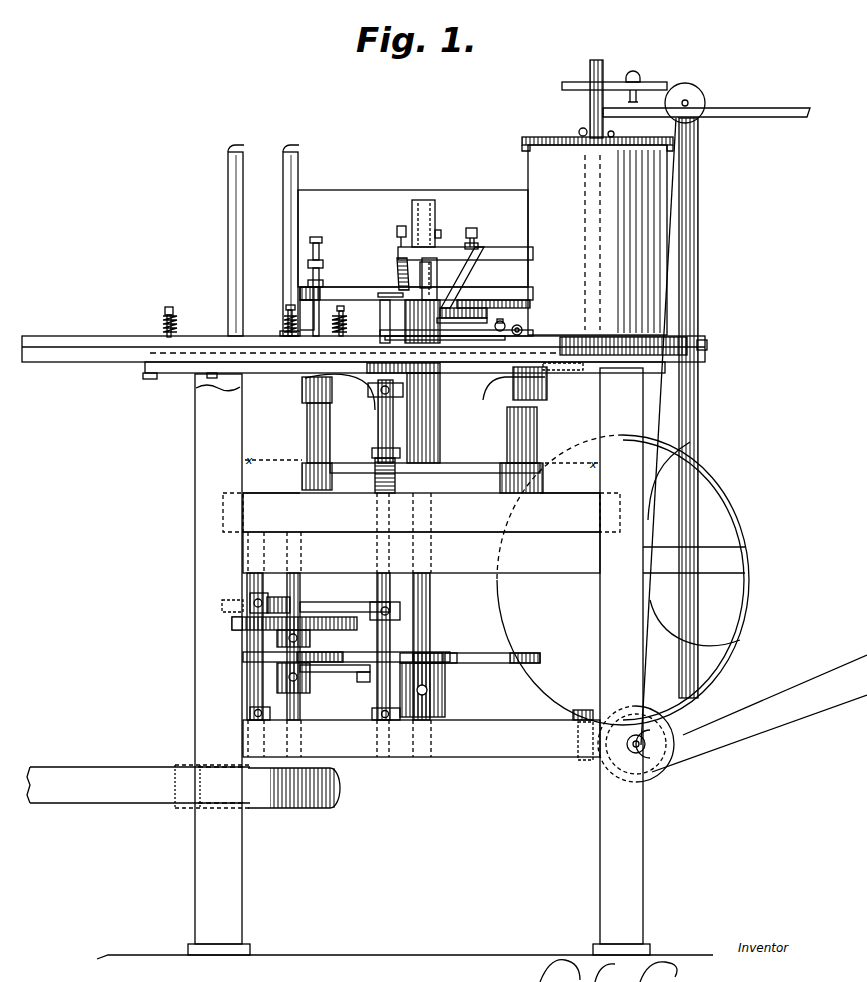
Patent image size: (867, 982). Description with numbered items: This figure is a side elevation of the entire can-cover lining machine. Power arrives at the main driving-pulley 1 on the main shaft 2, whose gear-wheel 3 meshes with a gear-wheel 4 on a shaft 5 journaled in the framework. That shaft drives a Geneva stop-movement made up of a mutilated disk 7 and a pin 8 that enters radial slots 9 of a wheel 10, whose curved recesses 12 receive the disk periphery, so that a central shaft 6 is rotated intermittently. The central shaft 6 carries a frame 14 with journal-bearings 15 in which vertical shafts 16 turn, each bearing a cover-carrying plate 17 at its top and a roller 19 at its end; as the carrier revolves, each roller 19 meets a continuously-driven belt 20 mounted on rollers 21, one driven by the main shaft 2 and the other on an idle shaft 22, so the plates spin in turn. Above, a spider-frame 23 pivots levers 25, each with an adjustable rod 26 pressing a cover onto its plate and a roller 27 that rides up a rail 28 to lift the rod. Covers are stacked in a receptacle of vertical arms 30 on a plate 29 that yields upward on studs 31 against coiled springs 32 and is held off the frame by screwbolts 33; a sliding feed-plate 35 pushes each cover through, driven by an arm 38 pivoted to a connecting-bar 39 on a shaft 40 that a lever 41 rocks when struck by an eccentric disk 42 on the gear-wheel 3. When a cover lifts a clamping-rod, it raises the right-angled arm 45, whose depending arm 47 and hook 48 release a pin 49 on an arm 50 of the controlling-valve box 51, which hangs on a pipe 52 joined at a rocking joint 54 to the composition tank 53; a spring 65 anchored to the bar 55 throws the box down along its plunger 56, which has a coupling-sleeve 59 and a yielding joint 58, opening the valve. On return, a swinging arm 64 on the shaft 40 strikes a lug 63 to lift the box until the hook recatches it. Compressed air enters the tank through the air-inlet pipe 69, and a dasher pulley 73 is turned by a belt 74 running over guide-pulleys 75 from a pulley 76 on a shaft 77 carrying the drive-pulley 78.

The main driving-pulley 1 is at (306, 810).
The main shaft 2 is at (255, 810).
The gear-wheel 3 is at (232, 625).
The gear-wheel 4 is at (345, 635).
The shaft 5 is at (300, 583).
The central shaft 6 is at (432, 593).
The mutilated disk 7 is at (300, 655).
The pin 8 is at (360, 672).
The radial slots 9 is at (443, 663).
The wheel 10 is at (453, 652).
The curved recesses 12 is at (482, 653).
The frame 14 is at (450, 467).
The journal-bearings 15 is at (303, 467).
The shafts 16 is at (330, 430).
The cover-carrying plates 17 is at (545, 333).
The rollers 19 is at (350, 493).
The belt 20 is at (303, 512).
The rollers 21 is at (245, 493).
The idle shaft 22 is at (600, 633).
The spider-frame 23 is at (460, 290).
The levers 25 is at (300, 288).
The vertical adjustable rod 26 is at (322, 245).
The roller 27 is at (320, 300).
The rail 28 is at (307, 310).
The plate 29 is at (290, 345).
The vertical arms 30 is at (283, 193).
The studs 31 is at (165, 310).
The coiled springs 32 is at (163, 327).
The adjustable screwbolts 33 is at (323, 383).
The feed-plate 35 is at (82, 333).
The arm 38 is at (176, 374).
The connecting-bar 39 is at (222, 362).
The shaft 40 is at (378, 696).
The lever 41 is at (357, 612).
The circular wheel or disk 42 is at (255, 603).
The pivoted right-angled arm 45 is at (441, 246).
The depending arm 47 is at (478, 246).
The hook 48 is at (380, 493).
The pin 49 is at (482, 308).
The arm 50 is at (472, 318).
The controlling-valve box 51 is at (447, 342).
The pipe 52 is at (505, 322).
The composition-holding tank 53 is at (597, 231).
The rocking joint 54 is at (521, 327).
The bar 55 is at (515, 250).
The plunger 56 is at (440, 282).
The joint 58 is at (403, 295).
The coupling-sleeve 59 is at (419, 280).
The projection or lug 63 is at (380, 330).
The swinging arm 64 is at (430, 370).
The coiled spring 65 is at (398, 270).
The air-inlet pipe 69 is at (750, 106).
The pulley 73 is at (590, 82).
The belt 74 is at (660, 82).
The guide-pulleys 75 is at (695, 92).
The pulley 76 is at (672, 738).
The shaft 77 is at (632, 748).
The drive-pulley 78 is at (668, 775).